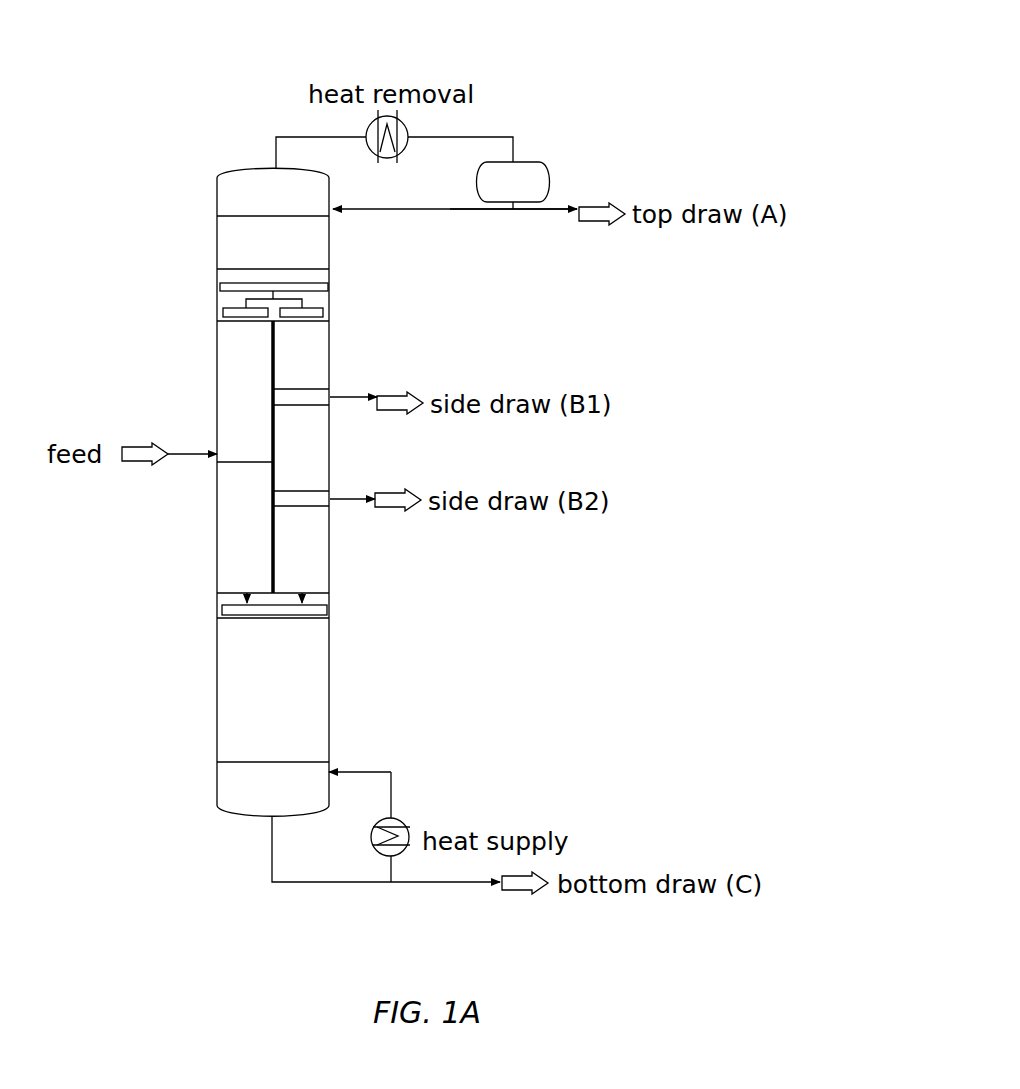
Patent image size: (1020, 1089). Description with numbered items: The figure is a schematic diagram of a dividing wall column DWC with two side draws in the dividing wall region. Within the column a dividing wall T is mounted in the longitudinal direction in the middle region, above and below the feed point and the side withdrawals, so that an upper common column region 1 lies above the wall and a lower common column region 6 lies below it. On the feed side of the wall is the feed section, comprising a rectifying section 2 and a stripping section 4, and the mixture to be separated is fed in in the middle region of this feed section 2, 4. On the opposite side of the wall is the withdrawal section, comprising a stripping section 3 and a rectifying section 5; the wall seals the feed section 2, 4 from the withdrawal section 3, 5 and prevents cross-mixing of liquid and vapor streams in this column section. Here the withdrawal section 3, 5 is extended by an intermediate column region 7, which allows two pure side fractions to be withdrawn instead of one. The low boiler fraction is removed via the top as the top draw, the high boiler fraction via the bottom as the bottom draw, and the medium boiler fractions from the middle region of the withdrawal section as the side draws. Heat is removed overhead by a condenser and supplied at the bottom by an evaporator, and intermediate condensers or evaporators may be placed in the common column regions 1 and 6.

The dividing wall column DWC is at (223, 173).
The upper common column region 1 is at (273, 242).
The rectifying section of the feed section 2 is at (245, 413).
The stripping section of the withdrawal section 3 is at (301, 377).
The stripping section of the feed section 4 is at (245, 553).
The rectifying section of the withdrawal section 5 is at (301, 563).
The lower common column region 6 is at (273, 690).
The intermediate column region 7 is at (301, 466).
The dividing wall T is at (275, 515).